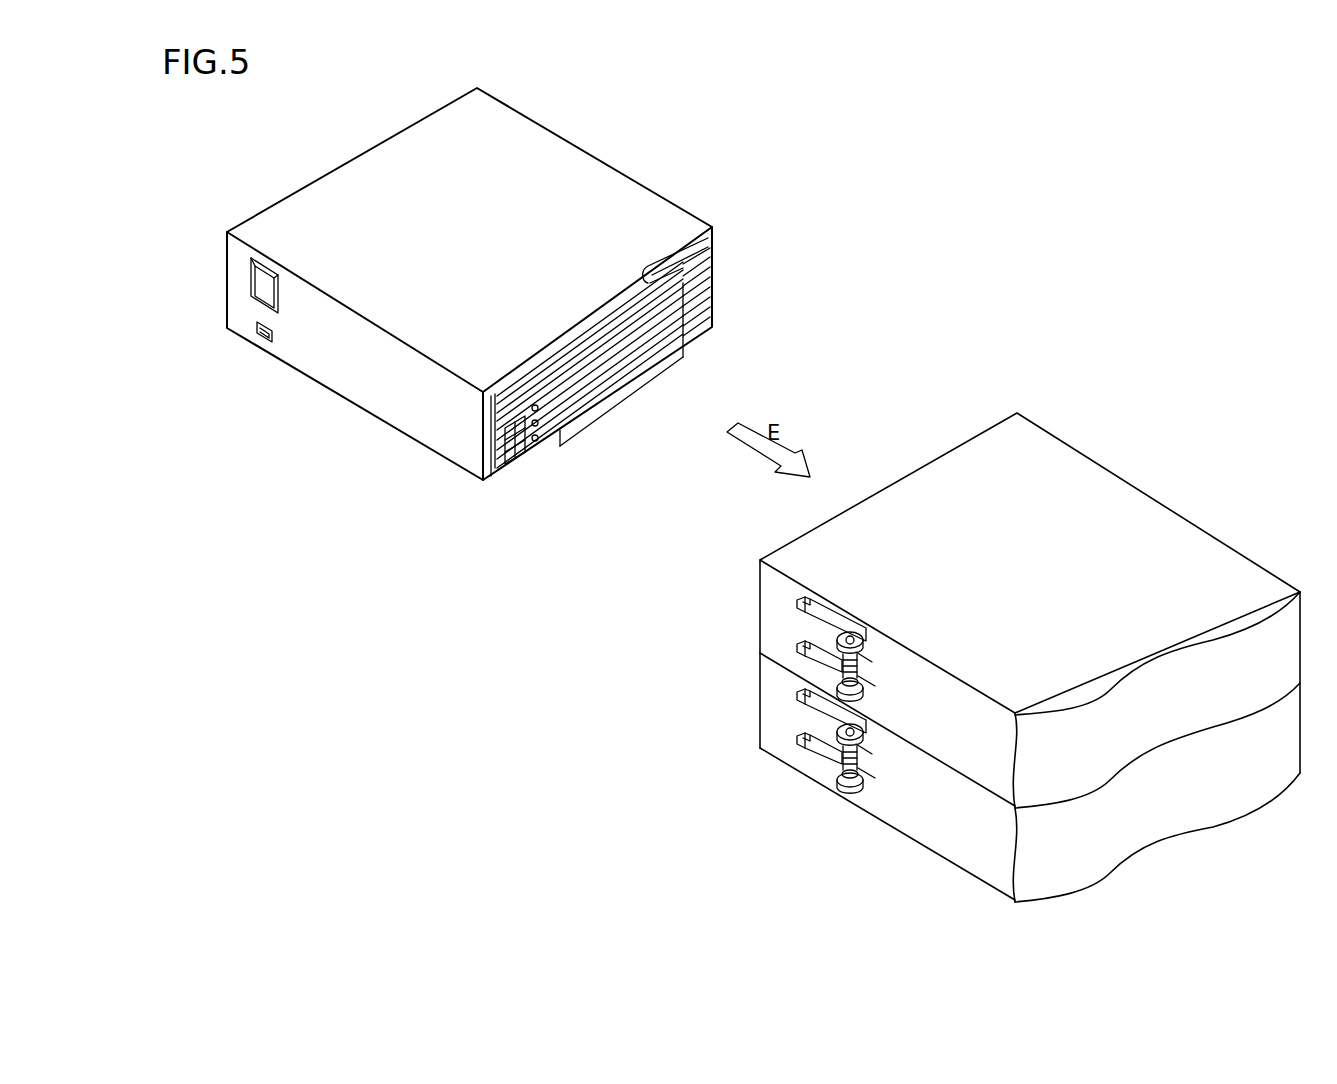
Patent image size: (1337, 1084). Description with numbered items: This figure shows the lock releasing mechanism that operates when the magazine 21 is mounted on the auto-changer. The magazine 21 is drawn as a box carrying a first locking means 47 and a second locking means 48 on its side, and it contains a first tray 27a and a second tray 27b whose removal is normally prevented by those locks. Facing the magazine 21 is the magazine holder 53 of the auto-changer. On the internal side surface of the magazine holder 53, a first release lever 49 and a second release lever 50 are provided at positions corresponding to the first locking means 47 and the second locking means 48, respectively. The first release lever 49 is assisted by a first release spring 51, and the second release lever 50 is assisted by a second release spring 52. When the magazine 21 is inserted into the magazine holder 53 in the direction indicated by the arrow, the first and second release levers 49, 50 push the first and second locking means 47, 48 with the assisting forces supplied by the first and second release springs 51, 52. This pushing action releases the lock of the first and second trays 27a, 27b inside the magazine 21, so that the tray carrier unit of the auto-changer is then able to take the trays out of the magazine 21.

The magazine 21 is at (562, 157).
The first locking means 47 is at (264, 283).
The second locking means 48 is at (261, 338).
The first tray 27a is at (707, 241).
The second tray 27b is at (580, 410).
The magazine holder 53 is at (1036, 445).
The first release lever 49 is at (797, 598).
The second release lever 50 is at (797, 645).
The first release spring 51 is at (868, 658).
The second release spring 52 is at (877, 680).